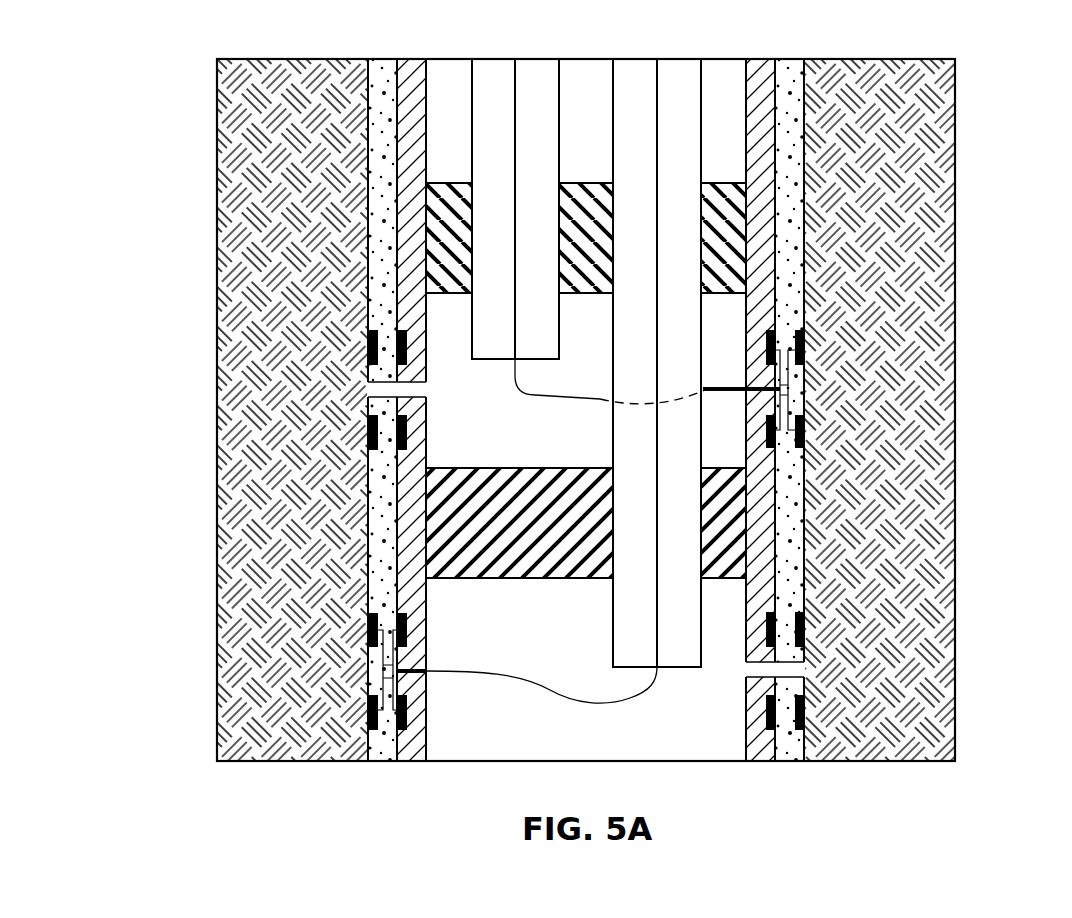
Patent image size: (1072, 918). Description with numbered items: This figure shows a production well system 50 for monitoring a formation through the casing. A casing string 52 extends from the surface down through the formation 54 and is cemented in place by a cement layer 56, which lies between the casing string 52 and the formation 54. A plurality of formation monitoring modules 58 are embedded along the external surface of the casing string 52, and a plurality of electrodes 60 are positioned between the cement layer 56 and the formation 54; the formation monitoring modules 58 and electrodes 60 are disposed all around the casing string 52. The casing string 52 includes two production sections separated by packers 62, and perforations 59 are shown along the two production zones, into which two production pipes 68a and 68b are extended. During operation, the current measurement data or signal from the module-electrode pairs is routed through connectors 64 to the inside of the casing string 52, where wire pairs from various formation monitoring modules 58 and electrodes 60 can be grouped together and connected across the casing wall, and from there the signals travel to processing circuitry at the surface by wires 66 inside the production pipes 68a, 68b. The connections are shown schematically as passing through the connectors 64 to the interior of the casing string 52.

The well system 50 is at (150, 45).
The casing string 52 is at (418, 121).
The formation 54 is at (970, 155).
The cement layer 56 is at (380, 163).
The formation monitoring module 58 is at (407, 622).
The perforation 59 is at (428, 390).
The electrode 60 is at (368, 340).
The packer 62 is at (438, 215).
The connector 64 is at (426, 675).
The wire 66 is at (540, 398).
The production pipe 68a is at (472, 87).
The production pipe 68b is at (613, 87).